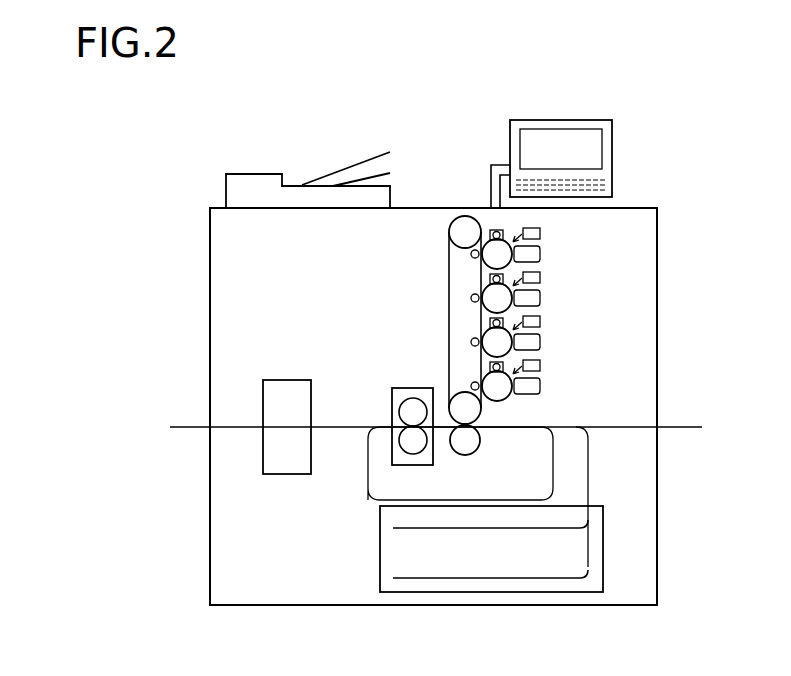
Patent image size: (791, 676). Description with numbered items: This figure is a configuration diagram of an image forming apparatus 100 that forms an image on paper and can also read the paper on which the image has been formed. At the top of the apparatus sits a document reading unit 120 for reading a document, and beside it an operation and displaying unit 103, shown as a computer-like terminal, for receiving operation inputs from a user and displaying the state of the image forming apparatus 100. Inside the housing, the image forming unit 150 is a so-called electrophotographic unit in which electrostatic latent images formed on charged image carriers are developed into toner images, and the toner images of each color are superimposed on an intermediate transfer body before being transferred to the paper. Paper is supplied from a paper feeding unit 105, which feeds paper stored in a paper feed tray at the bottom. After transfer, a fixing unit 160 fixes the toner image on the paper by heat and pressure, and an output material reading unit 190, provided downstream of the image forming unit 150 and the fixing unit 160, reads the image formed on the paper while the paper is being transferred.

The image forming apparatus 100 is at (433, 208).
The operation and displaying unit 103 is at (556, 118).
The paper feeding unit 105 is at (511, 559).
The document reading unit 120 is at (255, 172).
The image forming unit 150 is at (560, 239).
The fixing unit 160 is at (409, 386).
The output material reading unit 190 is at (286, 378).